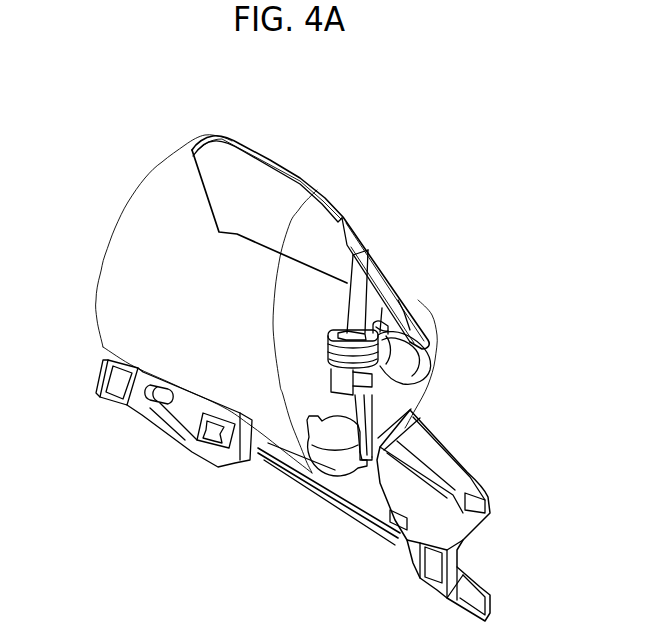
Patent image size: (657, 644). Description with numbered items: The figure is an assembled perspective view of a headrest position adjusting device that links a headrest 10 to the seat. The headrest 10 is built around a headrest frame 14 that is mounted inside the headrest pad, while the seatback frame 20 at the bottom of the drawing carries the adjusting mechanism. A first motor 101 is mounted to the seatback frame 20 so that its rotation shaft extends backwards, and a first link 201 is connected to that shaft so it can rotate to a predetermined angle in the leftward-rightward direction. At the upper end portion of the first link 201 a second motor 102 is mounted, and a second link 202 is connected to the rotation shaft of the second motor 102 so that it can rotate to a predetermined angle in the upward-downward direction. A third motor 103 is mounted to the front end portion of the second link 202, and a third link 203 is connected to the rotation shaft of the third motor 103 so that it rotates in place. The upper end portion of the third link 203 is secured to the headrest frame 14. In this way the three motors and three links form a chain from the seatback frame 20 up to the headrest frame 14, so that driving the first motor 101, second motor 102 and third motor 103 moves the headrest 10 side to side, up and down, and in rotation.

The headrest 10 is at (135, 158).
The headrest frame 14 is at (356, 222).
The seatback frame 20 is at (440, 483).
The first motor 101 is at (345, 456).
The second motor 102 is at (404, 312).
The third motor 103 is at (332, 373).
The first link 201 is at (376, 402).
The second link 202 is at (420, 369).
The third link 203 is at (343, 305).